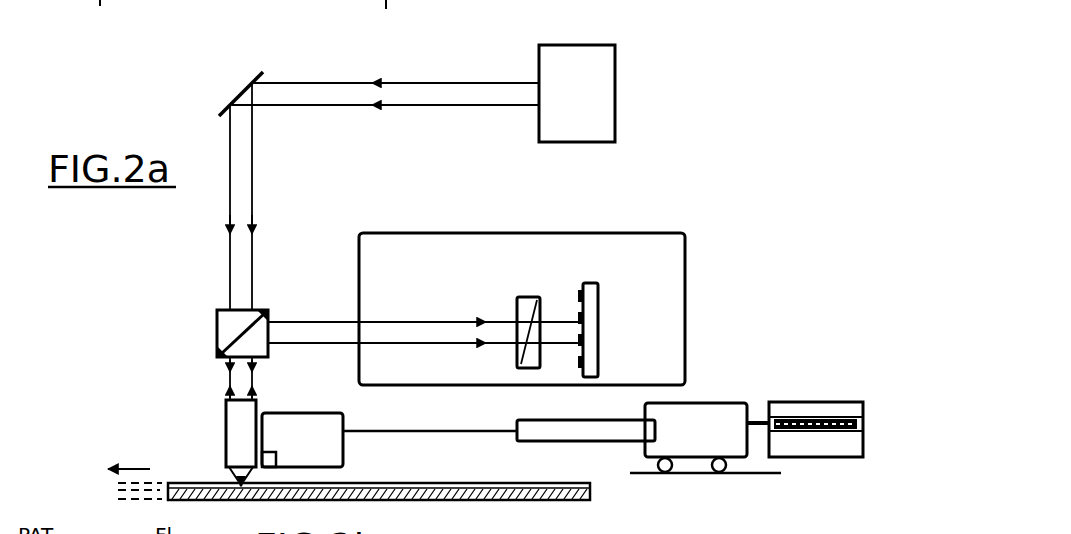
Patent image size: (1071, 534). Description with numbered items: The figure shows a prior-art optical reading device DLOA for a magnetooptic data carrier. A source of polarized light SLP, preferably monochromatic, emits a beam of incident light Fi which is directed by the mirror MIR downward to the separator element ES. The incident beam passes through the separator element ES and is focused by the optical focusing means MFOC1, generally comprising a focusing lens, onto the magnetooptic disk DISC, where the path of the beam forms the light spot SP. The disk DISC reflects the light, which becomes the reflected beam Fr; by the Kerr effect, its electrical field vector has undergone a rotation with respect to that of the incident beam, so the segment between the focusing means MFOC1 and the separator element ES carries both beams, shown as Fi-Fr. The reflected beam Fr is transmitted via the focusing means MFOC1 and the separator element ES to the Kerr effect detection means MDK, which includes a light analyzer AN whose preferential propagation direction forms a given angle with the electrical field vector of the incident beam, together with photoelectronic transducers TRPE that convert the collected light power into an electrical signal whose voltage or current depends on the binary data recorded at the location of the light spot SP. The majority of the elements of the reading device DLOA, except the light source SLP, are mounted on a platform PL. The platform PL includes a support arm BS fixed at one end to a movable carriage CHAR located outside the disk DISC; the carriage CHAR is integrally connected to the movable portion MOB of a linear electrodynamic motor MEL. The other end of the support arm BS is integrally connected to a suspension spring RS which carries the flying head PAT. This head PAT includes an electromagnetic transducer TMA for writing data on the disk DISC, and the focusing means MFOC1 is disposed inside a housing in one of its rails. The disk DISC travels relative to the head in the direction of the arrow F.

The optical reading device DLOA is at (173, 86).
The mirror MIR is at (250, 74).
The source of polarized light SLP is at (612, 74).
The beam of incident light Fi is at (228, 229).
The reflected beam Fr is at (425, 317).
The incident and reflected beams Fi-Fr is at (268, 378).
The separator element ES is at (216, 322).
The Kerr effect detection means MDK is at (690, 253).
The light analyzer AN is at (527, 304).
The photoelectronic transducers TRPE is at (586, 320).
The optical focusing means MFOC1 is at (226, 413).
The flying head PAT is at (344, 456).
The electromagnetic transducer TMA is at (276, 453).
The platform PL is at (512, 420).
The suspension spring RS is at (456, 432).
The support arm BS is at (600, 423).
The movable carriage CHAR is at (718, 404).
The movable portion MOB is at (756, 424).
The linear electrodynamic motor MEL is at (825, 402).
The magnetooptic disk DISC is at (495, 519).
The light spot SP is at (239, 487).
The direction of travel F is at (110, 464).